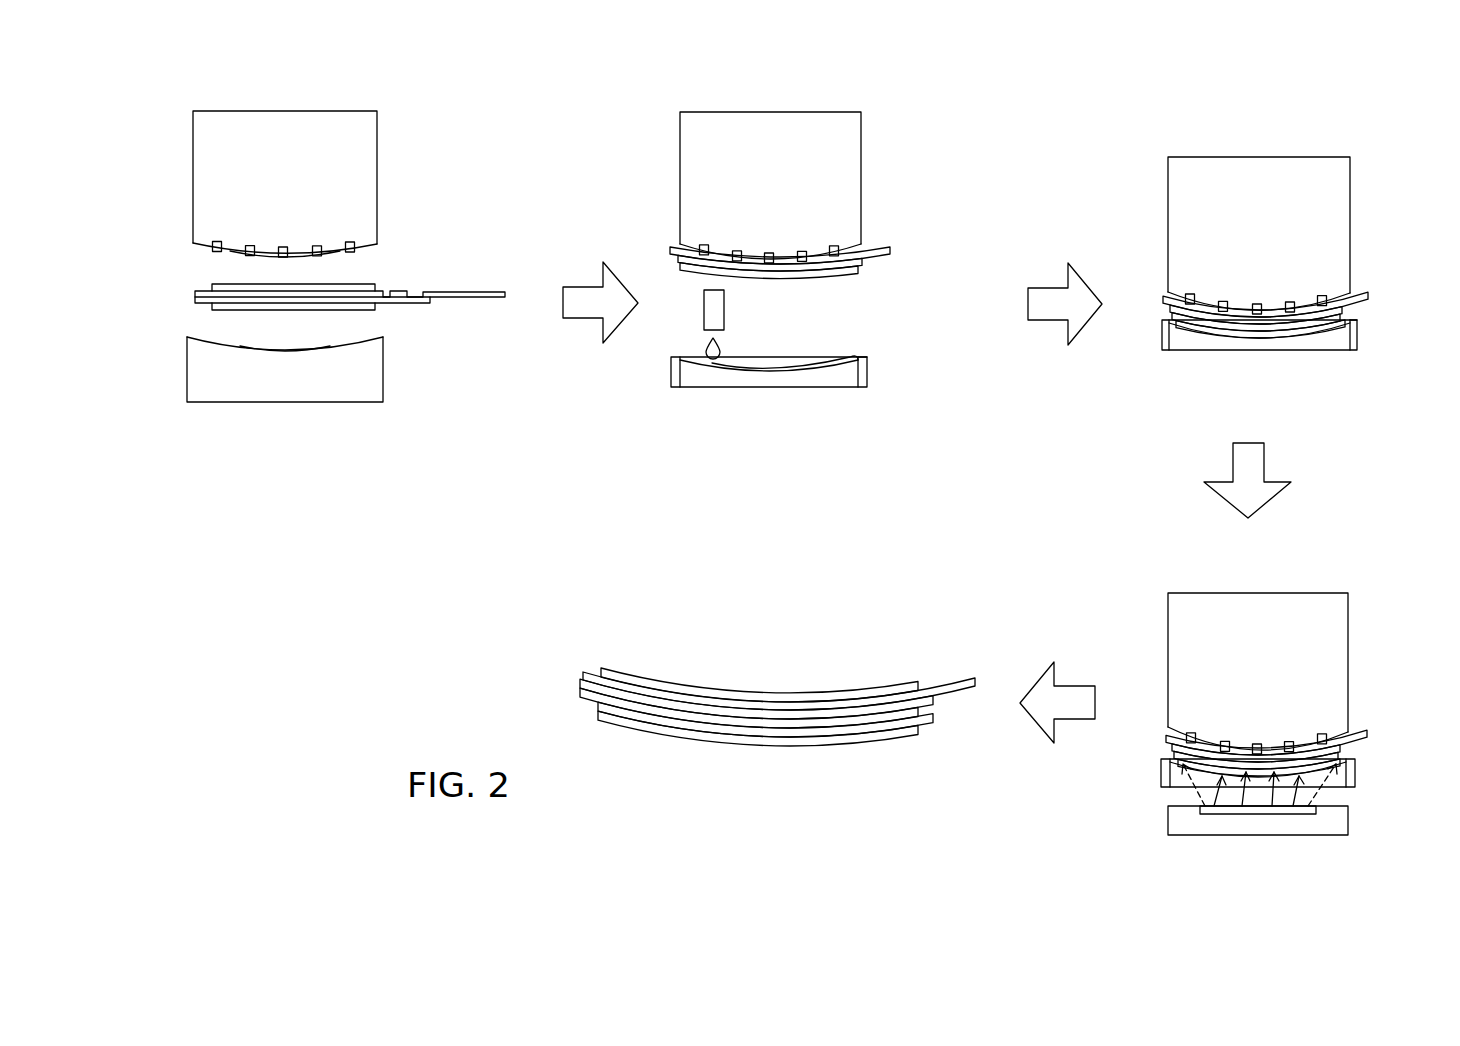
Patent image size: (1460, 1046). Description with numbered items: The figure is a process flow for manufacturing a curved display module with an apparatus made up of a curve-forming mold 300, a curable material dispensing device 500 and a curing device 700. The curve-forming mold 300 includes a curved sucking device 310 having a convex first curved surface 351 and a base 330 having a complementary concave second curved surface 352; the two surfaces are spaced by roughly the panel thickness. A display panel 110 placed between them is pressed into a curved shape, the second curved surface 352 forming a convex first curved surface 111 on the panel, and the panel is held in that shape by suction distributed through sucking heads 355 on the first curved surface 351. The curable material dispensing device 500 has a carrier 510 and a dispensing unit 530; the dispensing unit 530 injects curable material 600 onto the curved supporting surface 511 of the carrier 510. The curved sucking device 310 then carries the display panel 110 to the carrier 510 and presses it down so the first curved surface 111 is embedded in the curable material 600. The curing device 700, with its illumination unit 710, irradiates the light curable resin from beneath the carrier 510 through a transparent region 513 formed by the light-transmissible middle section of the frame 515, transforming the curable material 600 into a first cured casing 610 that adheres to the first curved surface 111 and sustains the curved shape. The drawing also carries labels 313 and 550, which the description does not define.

The display panel 110 is at (362, 298).
The first curved surface 111 is at (344, 311).
The curve-forming mold 300 is at (148, 222).
The curved sucking device 310 is at (202, 190).
The side wall of carrier 313 is at (861, 358).
The base 330 is at (193, 358).
The first curved surface 351 is at (338, 253).
The second curved surface 352 is at (357, 341).
The sucking heads 355 is at (253, 242).
The curable material dispensing device 500 is at (755, 477).
The carrier 510 is at (757, 417).
The supporting surface 511 is at (718, 352).
The transparent region 513 is at (842, 383).
The frame 515 is at (863, 386).
The dispensing unit 530 is at (712, 317).
The curved carrier 550 is at (1172, 338).
The curable material 600 is at (845, 355).
The first cured casing 610 is at (940, 717).
The curing device 700 is at (1342, 816).
The illumination unit 710 is at (1265, 812).